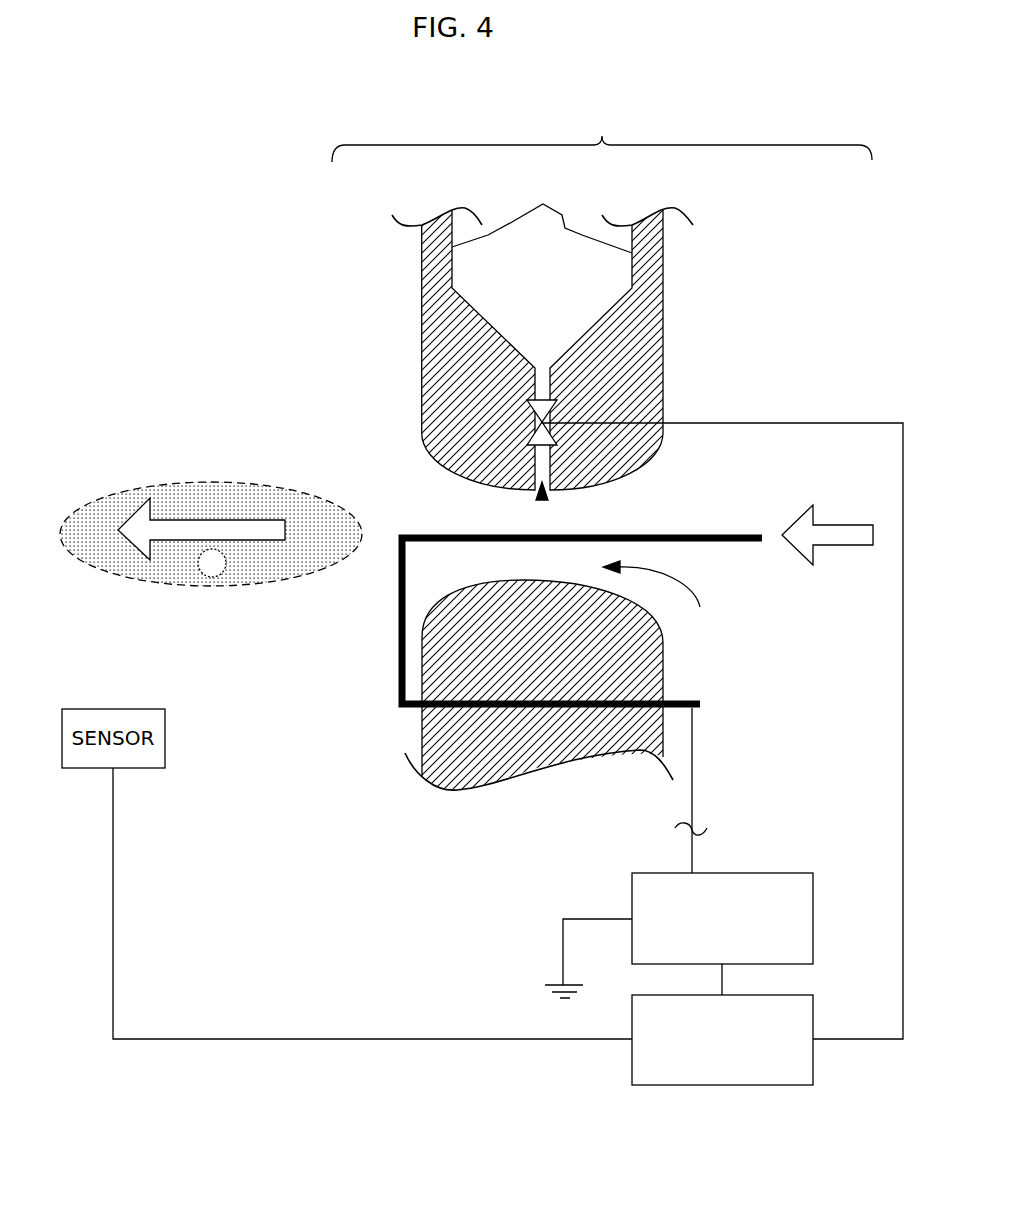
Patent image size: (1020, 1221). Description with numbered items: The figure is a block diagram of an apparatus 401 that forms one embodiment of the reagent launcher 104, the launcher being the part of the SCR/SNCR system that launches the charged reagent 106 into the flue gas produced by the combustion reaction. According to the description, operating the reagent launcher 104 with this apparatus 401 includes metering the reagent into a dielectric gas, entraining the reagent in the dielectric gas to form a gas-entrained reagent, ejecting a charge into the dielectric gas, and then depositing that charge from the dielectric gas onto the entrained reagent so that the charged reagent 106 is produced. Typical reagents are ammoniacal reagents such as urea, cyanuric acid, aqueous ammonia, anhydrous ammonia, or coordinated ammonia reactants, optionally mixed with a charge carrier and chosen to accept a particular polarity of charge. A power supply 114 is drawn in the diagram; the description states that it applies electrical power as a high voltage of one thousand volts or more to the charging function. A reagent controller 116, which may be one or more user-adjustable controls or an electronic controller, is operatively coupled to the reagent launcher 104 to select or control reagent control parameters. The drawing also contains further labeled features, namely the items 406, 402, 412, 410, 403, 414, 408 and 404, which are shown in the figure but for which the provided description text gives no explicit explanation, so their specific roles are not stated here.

The apparatus 401 is at (280, 128).
The reagent launcher 104 is at (602, 135).
The reagent 406 is at (512, 222).
The dispenser body 402 is at (663, 337).
The valve 412 is at (540, 422).
The reagent flow direction 410 is at (542, 500).
The reagent plume 403 is at (168, 482).
The charged reagent 106 is at (213, 578).
The electrode 414 is at (712, 535).
The electrode movement direction 408 is at (860, 525).
The flow direction 404 is at (662, 599).
The power supply 114 is at (722, 918).
The reagent controller 116 is at (722, 1040).